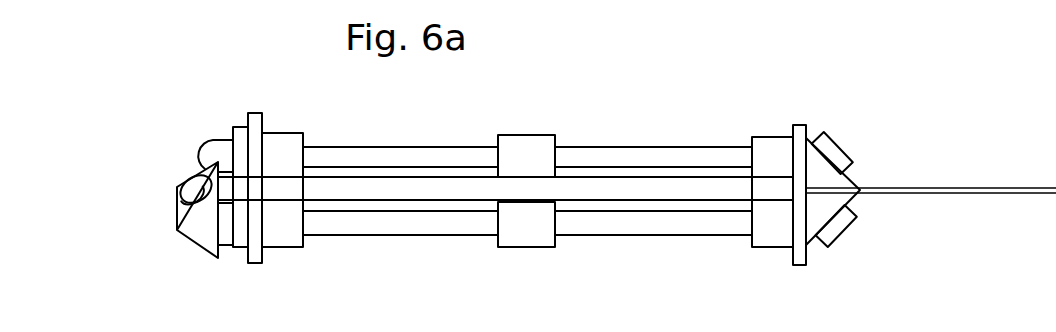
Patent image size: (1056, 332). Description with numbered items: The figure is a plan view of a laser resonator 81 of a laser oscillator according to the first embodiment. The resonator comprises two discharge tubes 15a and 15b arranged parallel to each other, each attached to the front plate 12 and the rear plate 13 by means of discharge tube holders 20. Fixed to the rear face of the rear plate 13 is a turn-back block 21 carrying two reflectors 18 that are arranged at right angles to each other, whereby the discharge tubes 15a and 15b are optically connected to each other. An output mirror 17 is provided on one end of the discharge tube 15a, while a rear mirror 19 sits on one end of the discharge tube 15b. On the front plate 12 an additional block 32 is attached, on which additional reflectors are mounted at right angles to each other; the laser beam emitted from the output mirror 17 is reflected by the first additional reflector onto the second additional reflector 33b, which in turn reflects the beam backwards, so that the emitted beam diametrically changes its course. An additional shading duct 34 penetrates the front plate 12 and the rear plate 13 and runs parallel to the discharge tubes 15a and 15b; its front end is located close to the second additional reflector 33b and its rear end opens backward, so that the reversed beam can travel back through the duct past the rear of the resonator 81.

The front plate 12 is at (258, 117).
The rear plate 13 is at (797, 130).
The discharge tube 15a is at (428, 227).
The discharge tube 15b is at (422, 155).
The output mirror 17 is at (243, 238).
The reflectors 18 is at (840, 148).
The rear mirror 19 is at (210, 138).
The discharge tube holders 20 is at (295, 142).
The turn-back block 21 is at (820, 215).
The additional block 32 is at (198, 235).
The second additional reflector 33b is at (188, 182).
The additional shading duct 34 is at (613, 190).
The laser resonator 81 is at (672, 135).